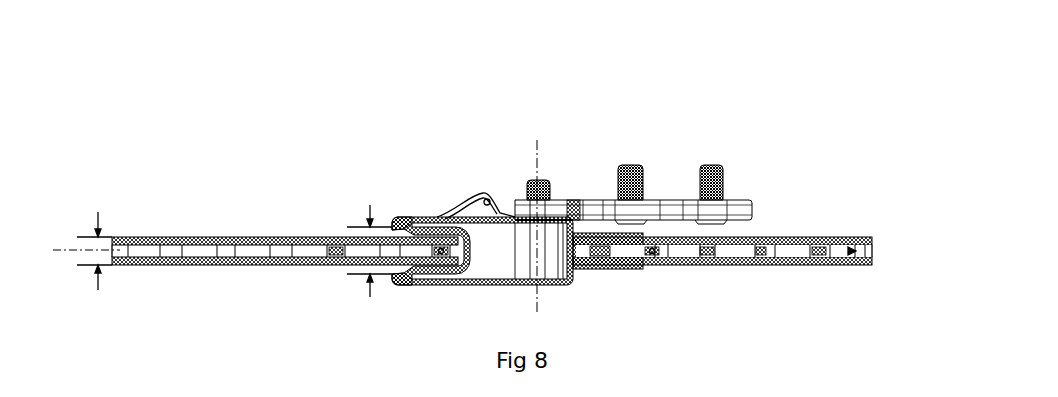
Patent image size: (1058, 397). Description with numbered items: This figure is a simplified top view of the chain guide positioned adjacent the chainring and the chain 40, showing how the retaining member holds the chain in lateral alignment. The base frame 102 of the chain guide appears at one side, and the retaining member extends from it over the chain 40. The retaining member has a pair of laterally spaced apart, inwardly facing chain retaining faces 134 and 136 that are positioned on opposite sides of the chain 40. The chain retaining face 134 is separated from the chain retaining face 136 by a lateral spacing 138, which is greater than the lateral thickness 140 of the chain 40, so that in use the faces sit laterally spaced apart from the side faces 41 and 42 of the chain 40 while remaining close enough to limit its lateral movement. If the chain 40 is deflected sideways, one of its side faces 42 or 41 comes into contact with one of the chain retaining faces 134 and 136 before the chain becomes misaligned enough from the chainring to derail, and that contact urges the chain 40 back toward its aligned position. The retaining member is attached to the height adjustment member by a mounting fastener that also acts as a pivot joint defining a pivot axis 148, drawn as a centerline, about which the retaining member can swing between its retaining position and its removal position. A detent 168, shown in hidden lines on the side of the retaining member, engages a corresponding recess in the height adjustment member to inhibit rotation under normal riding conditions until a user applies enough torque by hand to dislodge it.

The chain 40 is at (178, 230).
The side face 41 is at (262, 263).
The side face 42 is at (337, 238).
The base frame 102 is at (675, 203).
The chain retaining face 134 is at (400, 222).
The chain retaining face 136 is at (417, 277).
The lateral spacing 138 is at (367, 214).
The lateral thickness 140 is at (100, 222).
The pivot axis 148 is at (537, 150).
The detent 168 is at (493, 212).